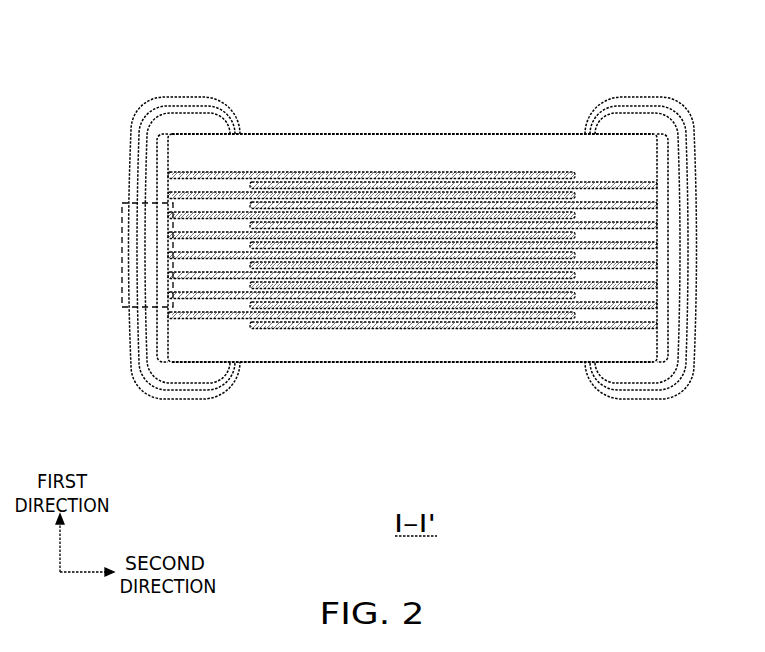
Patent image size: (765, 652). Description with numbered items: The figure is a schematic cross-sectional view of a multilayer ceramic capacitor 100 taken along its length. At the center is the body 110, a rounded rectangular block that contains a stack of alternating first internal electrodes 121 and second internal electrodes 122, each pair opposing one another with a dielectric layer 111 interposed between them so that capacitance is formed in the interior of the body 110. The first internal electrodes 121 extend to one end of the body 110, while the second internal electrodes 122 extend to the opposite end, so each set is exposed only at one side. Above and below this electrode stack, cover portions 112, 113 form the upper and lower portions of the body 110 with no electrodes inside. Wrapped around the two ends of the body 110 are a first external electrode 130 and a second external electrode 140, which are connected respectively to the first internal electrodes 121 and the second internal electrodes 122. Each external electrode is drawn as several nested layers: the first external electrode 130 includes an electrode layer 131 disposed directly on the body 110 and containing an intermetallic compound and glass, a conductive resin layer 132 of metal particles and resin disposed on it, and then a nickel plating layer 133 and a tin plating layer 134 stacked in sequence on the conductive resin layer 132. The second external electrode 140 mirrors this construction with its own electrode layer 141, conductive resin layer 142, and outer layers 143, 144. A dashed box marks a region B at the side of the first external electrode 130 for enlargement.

The multilayer ceramic capacitor 100 is at (358, 41).
The body 110 is at (410, 363).
The dielectric layer 111 is at (387, 174).
The cover portion 112 is at (515, 147).
The cover portion 113 is at (505, 348).
The first internal electrode 121 is at (345, 173).
The second internal electrode 122 is at (425, 182).
The first external electrode 130 is at (189, 303).
The electrode layer 131 is at (158, 343).
The conductive resin layer 132 is at (170, 380).
The nickel plating layer 133 is at (202, 388).
The tin plating layer 134 is at (112, 465).
The second external electrode 140 is at (640, 303).
The electrode layer 141 is at (565, 465).
The conductive resin layer 142 is at (657, 377).
The second electrode layer of second external electrode 143 is at (628, 382).
The first electrode layer of second external electrode 144 is at (588, 364).
The enlarged region B is at (122, 232).